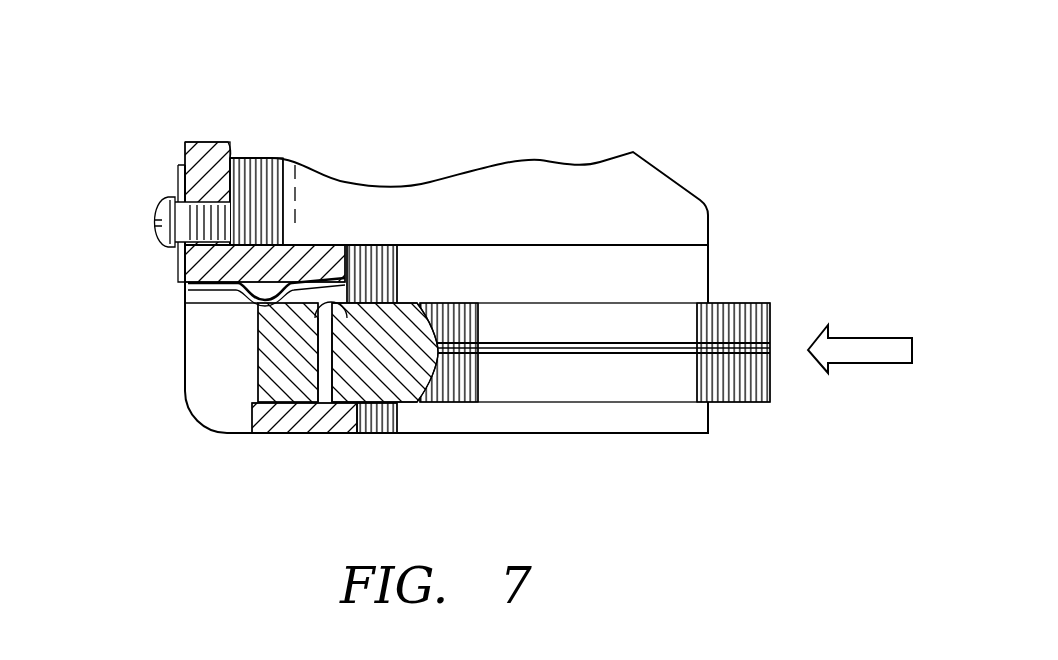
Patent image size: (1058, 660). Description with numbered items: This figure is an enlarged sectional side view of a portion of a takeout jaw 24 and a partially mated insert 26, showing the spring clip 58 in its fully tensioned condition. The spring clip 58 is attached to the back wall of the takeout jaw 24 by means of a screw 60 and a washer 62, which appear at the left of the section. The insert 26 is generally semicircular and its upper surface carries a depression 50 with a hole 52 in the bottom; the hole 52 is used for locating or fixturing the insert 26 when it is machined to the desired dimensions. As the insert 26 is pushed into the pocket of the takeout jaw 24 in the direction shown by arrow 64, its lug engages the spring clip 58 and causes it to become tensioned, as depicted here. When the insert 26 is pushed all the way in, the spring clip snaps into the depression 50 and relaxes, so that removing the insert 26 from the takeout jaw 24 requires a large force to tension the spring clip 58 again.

The takeout jaw 24 is at (543, 138).
The insert 26 is at (742, 292).
The depression 50 is at (303, 311).
The hole 52 is at (327, 357).
The spring clip 58 is at (245, 288).
The screw 60 is at (160, 213).
The washer 62 is at (178, 195).
The arrow 64 is at (858, 365).